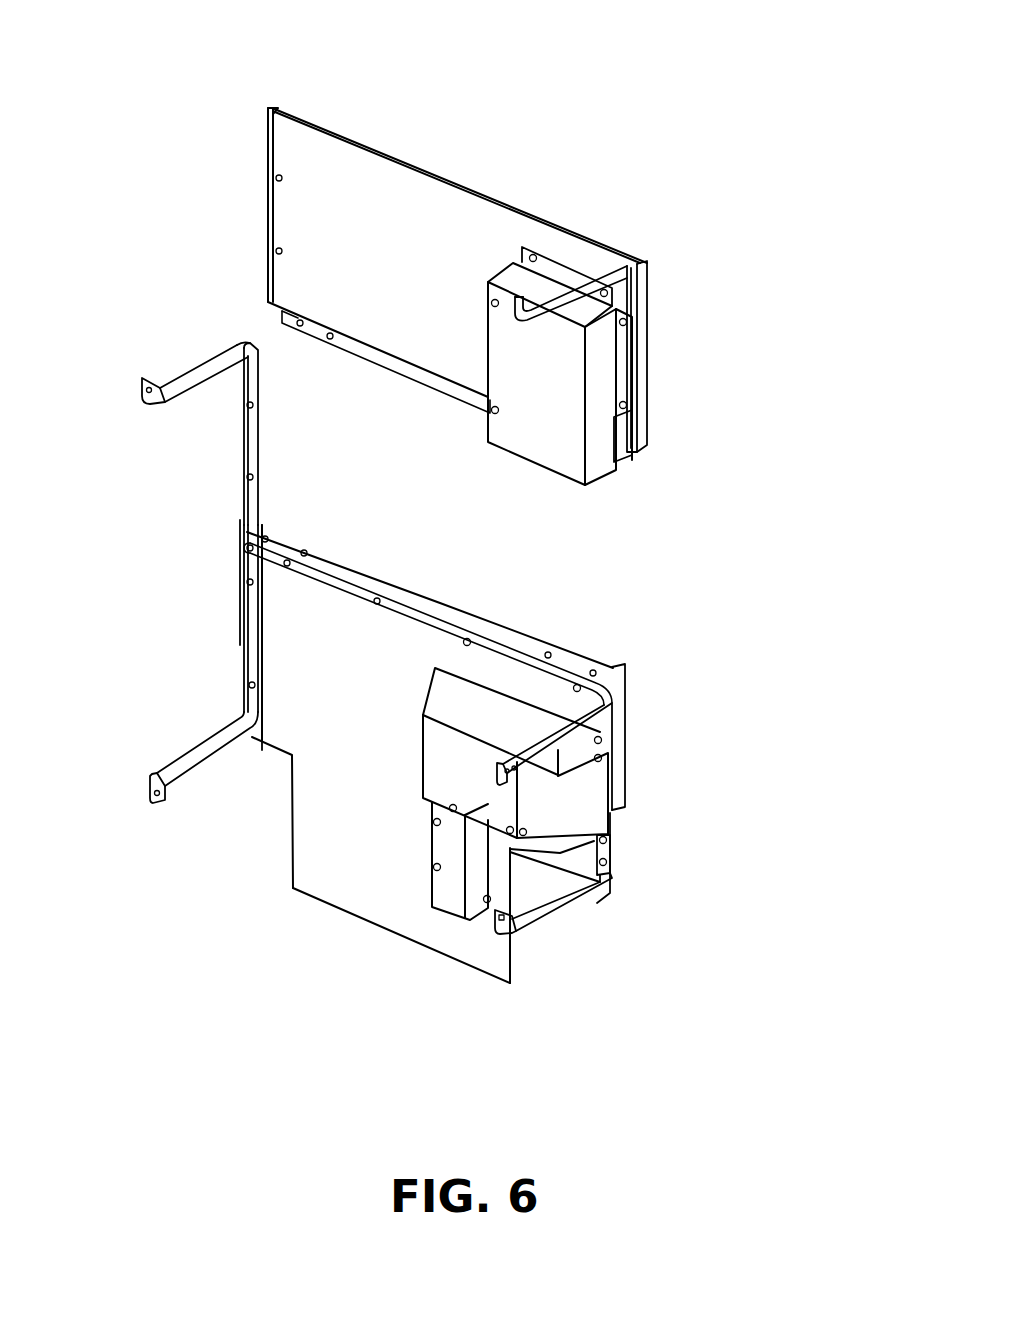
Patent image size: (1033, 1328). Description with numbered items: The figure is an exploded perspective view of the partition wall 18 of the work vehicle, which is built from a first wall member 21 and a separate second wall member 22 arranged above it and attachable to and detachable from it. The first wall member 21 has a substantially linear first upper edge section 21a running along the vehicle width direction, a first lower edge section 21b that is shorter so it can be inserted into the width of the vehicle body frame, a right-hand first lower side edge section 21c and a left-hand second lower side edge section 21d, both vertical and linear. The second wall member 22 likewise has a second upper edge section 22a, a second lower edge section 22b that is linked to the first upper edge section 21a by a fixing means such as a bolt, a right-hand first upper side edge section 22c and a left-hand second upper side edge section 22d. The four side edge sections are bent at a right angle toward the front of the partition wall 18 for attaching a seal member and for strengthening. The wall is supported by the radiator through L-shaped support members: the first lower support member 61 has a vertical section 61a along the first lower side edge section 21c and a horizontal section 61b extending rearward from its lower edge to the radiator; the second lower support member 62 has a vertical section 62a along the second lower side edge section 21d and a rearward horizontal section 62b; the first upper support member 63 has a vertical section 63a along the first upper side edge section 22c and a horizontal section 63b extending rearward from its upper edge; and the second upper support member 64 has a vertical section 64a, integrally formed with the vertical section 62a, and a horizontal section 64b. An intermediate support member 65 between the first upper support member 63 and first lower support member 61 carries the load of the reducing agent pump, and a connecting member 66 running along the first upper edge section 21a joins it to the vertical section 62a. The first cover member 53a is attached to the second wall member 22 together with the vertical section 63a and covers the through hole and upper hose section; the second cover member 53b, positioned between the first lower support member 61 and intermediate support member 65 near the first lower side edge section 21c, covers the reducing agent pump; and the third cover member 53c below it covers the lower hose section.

The partition wall 18 is at (545, 105).
The second wall member 22 is at (428, 148).
The second upper edge section 22a is at (347, 140).
The second lower edge section 22b is at (383, 370).
The first upper side edge section 22c is at (653, 313).
The second upper side edge section 22d is at (267, 172).
The first upper support member 63 is at (547, 293).
The vertical section 63a is at (627, 436).
The horizontal section 63b is at (585, 285).
The first cover member 53a is at (540, 447).
The second upper support member 64 is at (192, 338).
The vertical section 64a is at (248, 438).
The horizontal section 64b is at (210, 370).
The first wall member 21 is at (340, 938).
The first upper edge section 21a is at (372, 575).
The first lower edge section 21b is at (387, 935).
The first lower side edge section 21c is at (615, 820).
The second lower side edge section 21d is at (245, 672).
The connecting member 66 is at (423, 627).
The second lower support member 62 is at (192, 737).
The vertical section 62a is at (253, 617).
The horizontal section 62b is at (193, 753).
The second cover member 53b is at (500, 718).
The third cover member 53c is at (447, 897).
The intermediate support member 65 is at (552, 747).
The first lower support member 61 is at (568, 908).
The vertical section 61a is at (612, 848).
The horizontal section 61b is at (547, 910).